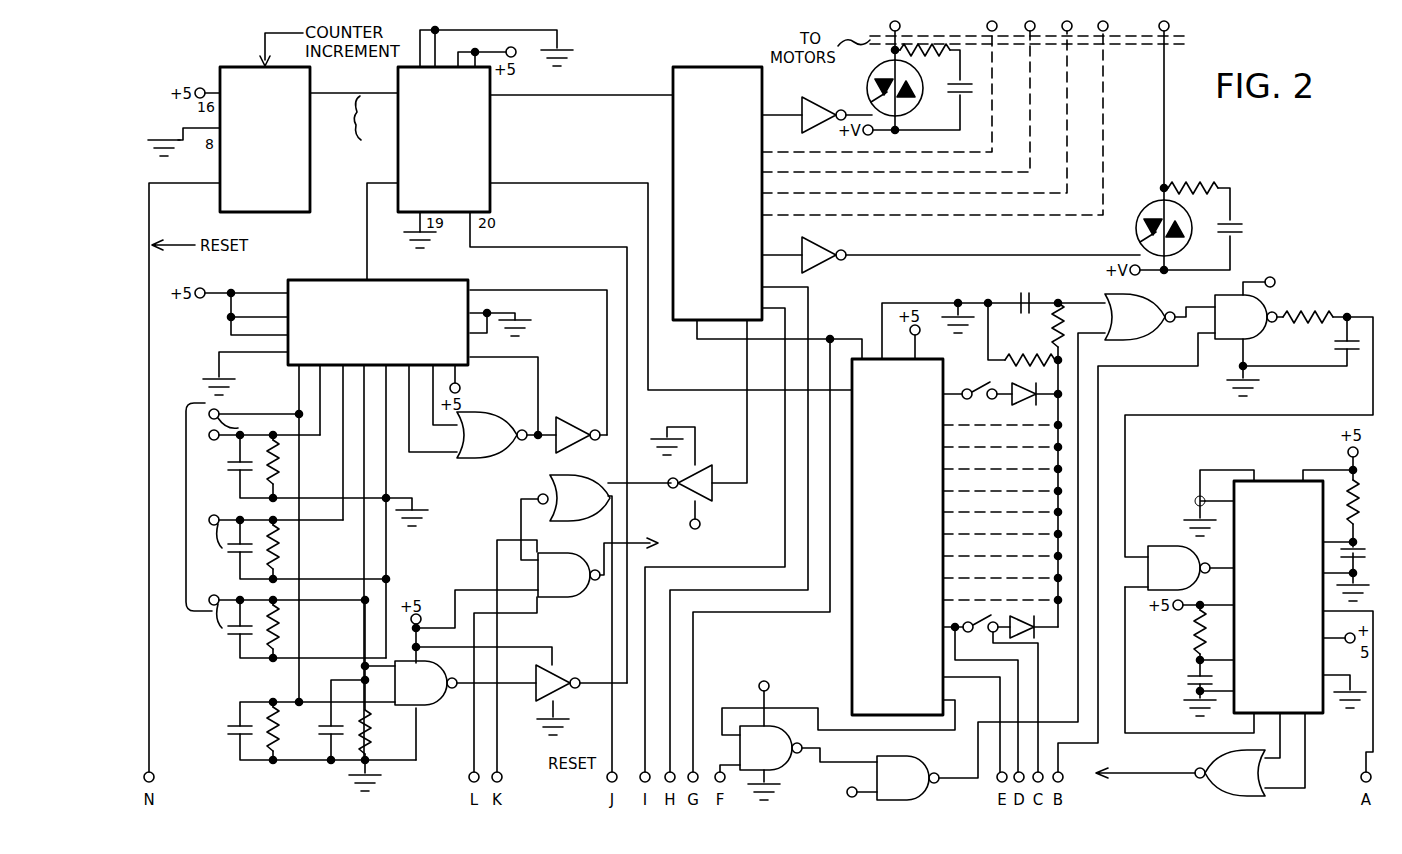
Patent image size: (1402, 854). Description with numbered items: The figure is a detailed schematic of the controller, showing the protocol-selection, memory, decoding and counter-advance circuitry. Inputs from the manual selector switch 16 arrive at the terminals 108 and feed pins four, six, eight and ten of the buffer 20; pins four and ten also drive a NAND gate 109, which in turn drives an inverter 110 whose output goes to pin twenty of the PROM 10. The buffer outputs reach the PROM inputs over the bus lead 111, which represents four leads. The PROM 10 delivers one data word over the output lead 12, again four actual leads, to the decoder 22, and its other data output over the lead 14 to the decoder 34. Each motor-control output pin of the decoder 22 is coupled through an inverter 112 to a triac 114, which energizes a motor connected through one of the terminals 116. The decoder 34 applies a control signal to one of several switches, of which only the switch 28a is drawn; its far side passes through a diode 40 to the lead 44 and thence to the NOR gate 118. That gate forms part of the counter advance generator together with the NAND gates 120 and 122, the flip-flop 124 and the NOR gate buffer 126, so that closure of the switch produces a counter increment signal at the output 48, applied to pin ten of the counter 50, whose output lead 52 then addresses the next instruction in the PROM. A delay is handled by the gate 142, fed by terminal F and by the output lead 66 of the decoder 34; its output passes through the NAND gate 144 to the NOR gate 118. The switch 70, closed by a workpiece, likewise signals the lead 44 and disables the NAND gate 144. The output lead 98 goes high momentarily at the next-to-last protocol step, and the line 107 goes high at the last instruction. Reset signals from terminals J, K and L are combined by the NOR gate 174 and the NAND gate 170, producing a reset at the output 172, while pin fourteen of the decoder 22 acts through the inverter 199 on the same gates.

The PROM 10 is at (433, 93).
The counter 50 is at (278, 117).
The output lead 52 is at (354, 119).
The output lead 12 is at (594, 92).
The lead 14 is at (613, 182).
The buffer 20 is at (367, 307).
The decoder 22 is at (707, 95).
The decoder 34 is at (867, 461).
The bus lead 111 is at (367, 238).
The manual selector switch 16 is at (200, 515).
The terminals 108 is at (315, 536).
The NAND gate 109 is at (408, 693).
The inverter 110 is at (568, 674).
The inverter 112 is at (789, 98).
The triac 114 is at (911, 113).
The terminals 116 is at (922, 58).
The NOR gate 118 is at (1121, 327).
The NAND gate 120 is at (1229, 327).
The NAND gate 122 is at (1161, 577).
The flip-flop 124 is at (1269, 639).
The NOR gate buffer 126 is at (1226, 782).
The gate 142 is at (750, 758).
The NAND gate 144 is at (888, 788).
The NAND gate 170 is at (549, 585).
The output 172 is at (601, 547).
The NOR gate 174 is at (566, 507).
The inverter 199 is at (690, 466).
The line 107 is at (784, 455).
The output lead 98 is at (808, 298).
The switch 28a is at (977, 382).
The diode 40 is at (1018, 372).
The lead 44 is at (1048, 416).
The switch 70 is at (982, 614).
The output lead 66 is at (952, 750).
The output 48 is at (1086, 770).